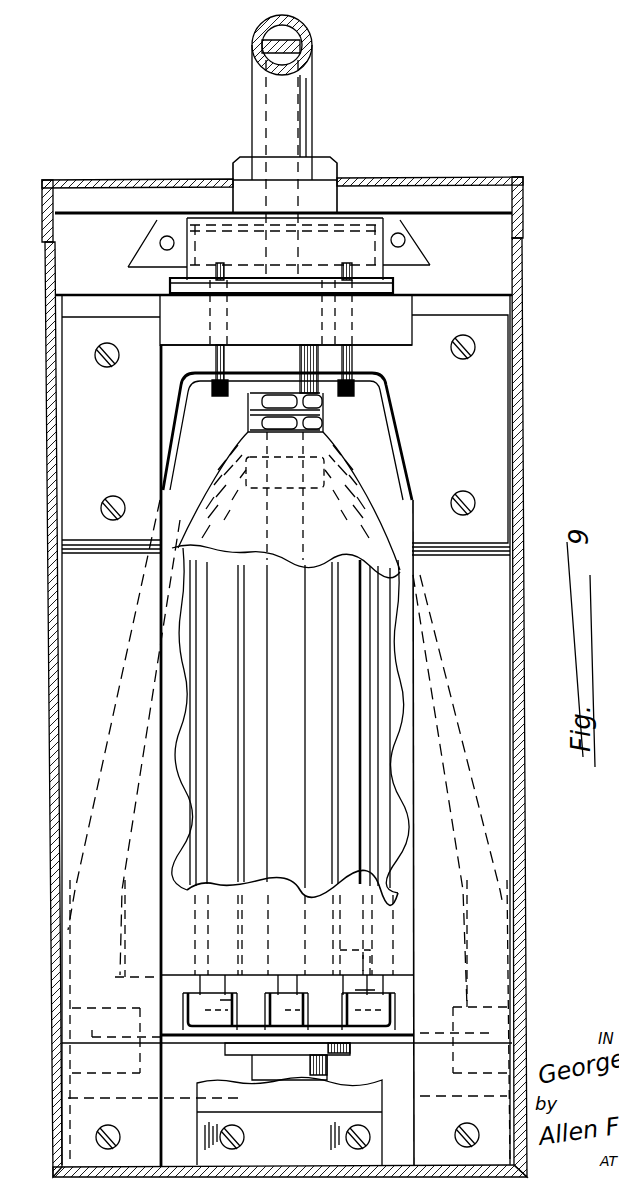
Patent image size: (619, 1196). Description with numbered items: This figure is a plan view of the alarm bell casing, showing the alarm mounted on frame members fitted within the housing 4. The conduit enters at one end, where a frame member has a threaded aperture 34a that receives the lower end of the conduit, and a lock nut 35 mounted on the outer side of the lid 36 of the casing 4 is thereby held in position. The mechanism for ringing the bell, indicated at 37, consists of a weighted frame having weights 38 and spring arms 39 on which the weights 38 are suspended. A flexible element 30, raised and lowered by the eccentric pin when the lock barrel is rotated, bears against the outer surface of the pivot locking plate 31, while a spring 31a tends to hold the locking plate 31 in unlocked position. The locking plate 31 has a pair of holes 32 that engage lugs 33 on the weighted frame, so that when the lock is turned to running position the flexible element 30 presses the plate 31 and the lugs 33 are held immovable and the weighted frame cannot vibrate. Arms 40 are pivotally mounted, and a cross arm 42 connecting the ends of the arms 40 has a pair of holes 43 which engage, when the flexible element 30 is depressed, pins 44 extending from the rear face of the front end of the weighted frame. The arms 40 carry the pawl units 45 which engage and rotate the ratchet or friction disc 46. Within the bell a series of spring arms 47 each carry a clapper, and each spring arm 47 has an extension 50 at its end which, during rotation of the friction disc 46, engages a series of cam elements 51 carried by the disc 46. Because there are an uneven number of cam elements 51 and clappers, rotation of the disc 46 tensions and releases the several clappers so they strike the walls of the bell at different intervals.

The housing 4 is at (48, 358).
The flexible element 30 is at (249, 110).
The pivot locking plate 31 is at (271, 285).
The spring 31a is at (251, 287).
The holes 32 is at (207, 296).
The lugs 33 is at (219, 266).
The threaded aperture 34a is at (247, 200).
The lock nut 35 is at (245, 165).
The lid 36 is at (98, 180).
The bell ringing mechanism 37 is at (194, 496).
The weights 38 is at (286, 435).
The spring arms 39 is at (80, 736).
The arms 40 is at (108, 680).
The cross arm 42 is at (214, 378).
The holes 43 is at (245, 388).
The pins 44 is at (228, 381).
The pawl units 45 is at (128, 1010).
The friction disc 46 is at (402, 1037).
The spring arms 47 is at (200, 776).
The extension 50 is at (375, 981).
The cam elements 51 is at (190, 1030).